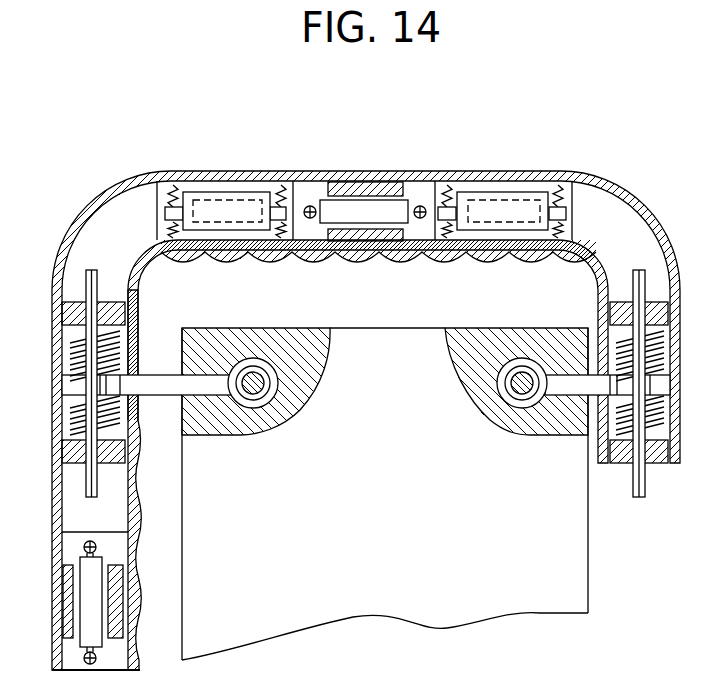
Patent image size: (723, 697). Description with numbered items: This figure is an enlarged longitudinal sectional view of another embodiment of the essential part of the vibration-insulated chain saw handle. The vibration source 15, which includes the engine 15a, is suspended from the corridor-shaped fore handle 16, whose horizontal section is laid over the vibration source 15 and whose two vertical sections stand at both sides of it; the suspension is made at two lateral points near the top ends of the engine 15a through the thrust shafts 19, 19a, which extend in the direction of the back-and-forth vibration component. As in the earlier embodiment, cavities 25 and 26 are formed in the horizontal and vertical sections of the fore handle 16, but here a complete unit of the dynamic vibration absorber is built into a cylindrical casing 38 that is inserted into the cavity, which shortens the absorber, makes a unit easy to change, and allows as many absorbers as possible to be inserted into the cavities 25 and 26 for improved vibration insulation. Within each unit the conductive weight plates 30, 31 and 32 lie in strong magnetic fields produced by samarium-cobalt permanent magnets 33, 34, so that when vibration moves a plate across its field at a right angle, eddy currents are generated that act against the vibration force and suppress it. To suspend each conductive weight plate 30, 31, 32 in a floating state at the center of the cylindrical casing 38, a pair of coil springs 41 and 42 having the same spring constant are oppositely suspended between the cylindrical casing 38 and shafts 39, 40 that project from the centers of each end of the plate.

The vibration source 15 is at (570, 582).
The engine 15a is at (362, 362).
The fore handle 16 is at (598, 172).
The thrust shaft 19 is at (522, 372).
The thrust shaft 19a is at (247, 376).
The cavity 25 is at (312, 193).
The cavity 26 is at (112, 492).
The conductive weight plate 30 is at (545, 190).
The conductive weight plate 31 is at (218, 193).
The conductive weight plate 32 is at (382, 210).
The permanent magnet 33 is at (205, 193).
The permanent magnet 34 is at (363, 241).
The cylindrical casing 38 is at (150, 183).
The shaft 39 is at (277, 207).
The shaft 40 is at (168, 214).
The coil spring 41 is at (168, 186).
The coil spring 42 is at (172, 247).